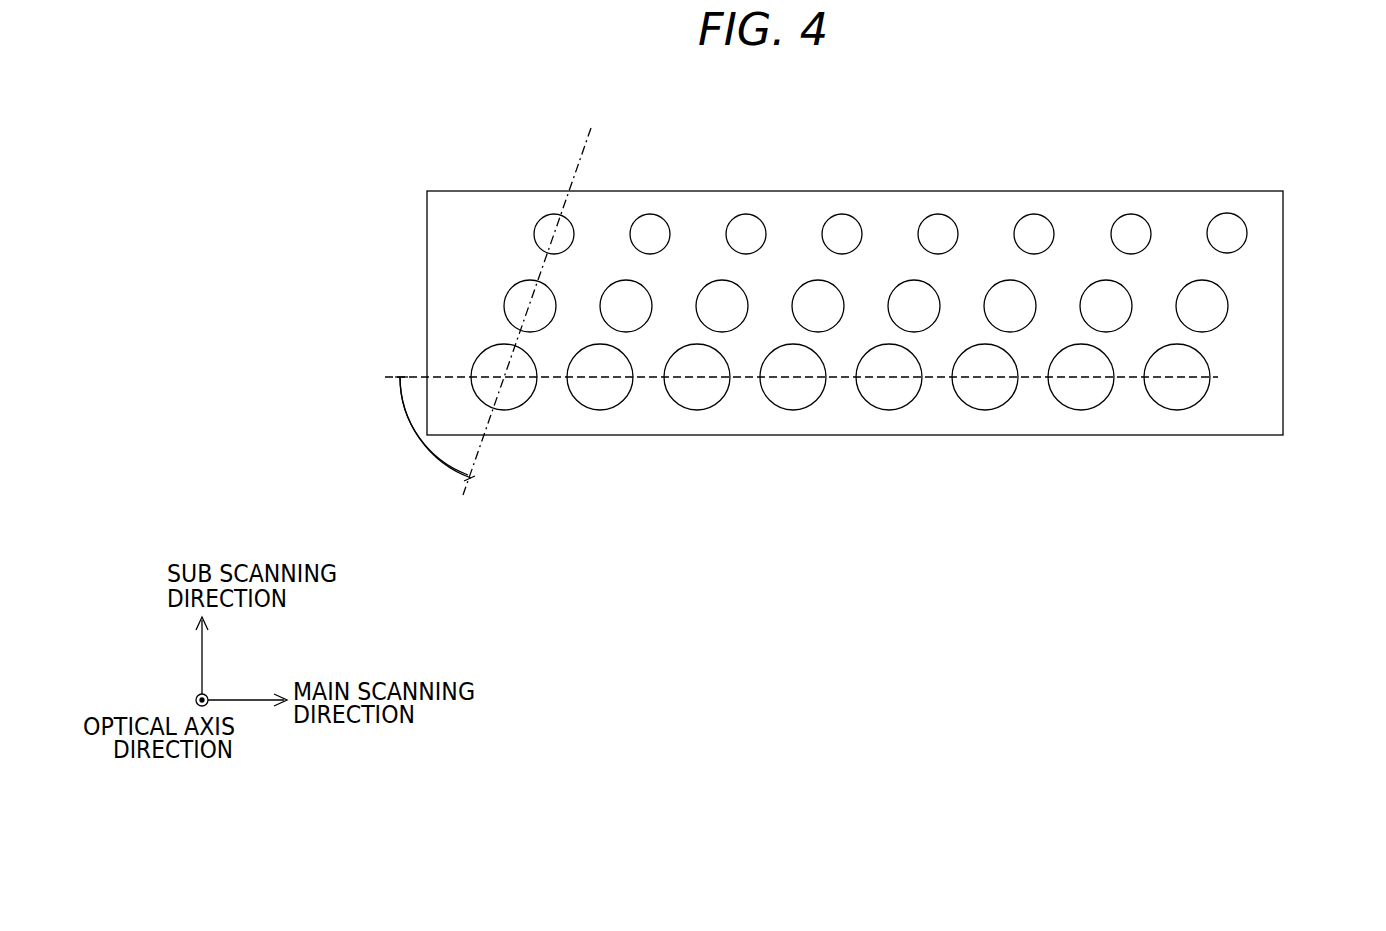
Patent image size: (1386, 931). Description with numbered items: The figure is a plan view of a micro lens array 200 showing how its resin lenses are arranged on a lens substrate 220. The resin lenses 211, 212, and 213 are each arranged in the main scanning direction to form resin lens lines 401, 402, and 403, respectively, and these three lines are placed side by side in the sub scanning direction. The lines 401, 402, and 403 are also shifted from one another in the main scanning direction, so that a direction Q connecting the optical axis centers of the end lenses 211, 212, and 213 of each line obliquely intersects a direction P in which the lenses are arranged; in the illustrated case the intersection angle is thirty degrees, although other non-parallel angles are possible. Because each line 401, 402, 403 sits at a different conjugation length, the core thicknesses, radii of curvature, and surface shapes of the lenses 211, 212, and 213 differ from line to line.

The light source 200 is at (410, 136).
The light emitting element substrate 220 is at (427, 237).
The resin lens 211 is at (793, 411).
The resin lens 212 is at (1010, 280).
The resin lens 213 is at (1228, 213).
The resin lens line 401 is at (1290, 345).
The resin lens line 402 is at (1290, 273).
The resin lens line 403 is at (1290, 200).